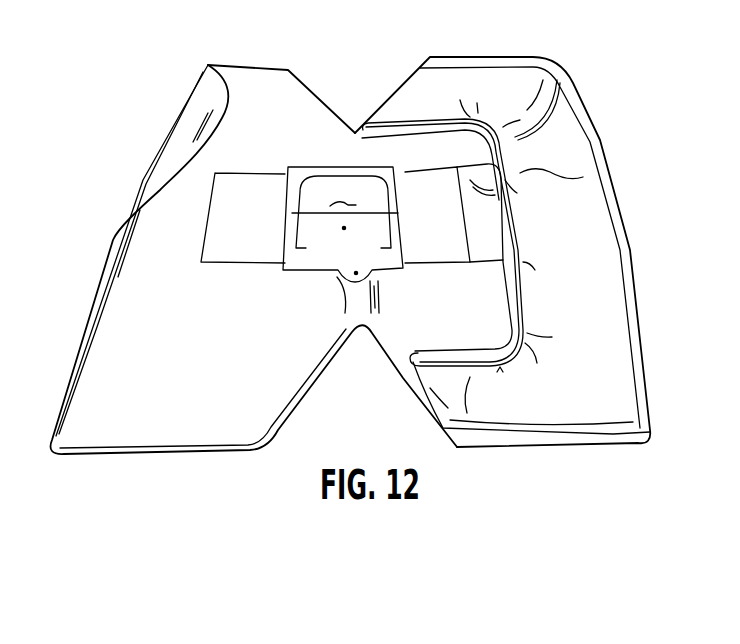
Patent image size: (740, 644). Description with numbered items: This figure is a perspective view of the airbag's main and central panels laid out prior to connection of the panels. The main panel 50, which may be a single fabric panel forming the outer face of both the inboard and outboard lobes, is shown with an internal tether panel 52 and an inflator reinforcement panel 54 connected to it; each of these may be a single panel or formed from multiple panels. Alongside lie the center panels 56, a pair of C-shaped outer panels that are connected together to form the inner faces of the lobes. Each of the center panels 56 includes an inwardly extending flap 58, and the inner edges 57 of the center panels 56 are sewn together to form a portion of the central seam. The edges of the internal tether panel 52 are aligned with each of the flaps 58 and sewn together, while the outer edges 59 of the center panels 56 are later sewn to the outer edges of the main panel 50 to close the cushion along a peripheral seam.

The main panel 50 is at (183, 420).
The internal tether panel 52 is at (425, 170).
The inflator reinforcement panel 54 is at (308, 175).
The center panels 56 is at (573, 157).
The inner edges 57 is at (460, 363).
The flap 58 is at (468, 237).
The outer edges 59 is at (545, 70).